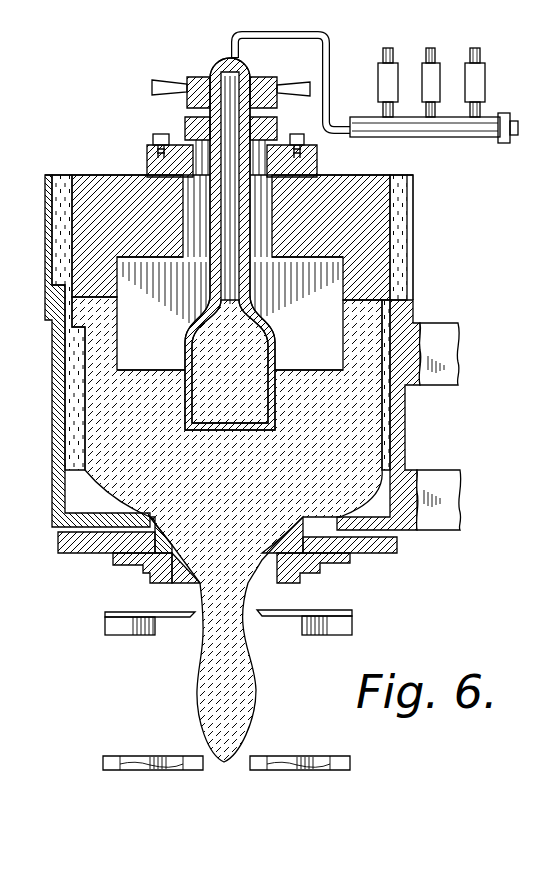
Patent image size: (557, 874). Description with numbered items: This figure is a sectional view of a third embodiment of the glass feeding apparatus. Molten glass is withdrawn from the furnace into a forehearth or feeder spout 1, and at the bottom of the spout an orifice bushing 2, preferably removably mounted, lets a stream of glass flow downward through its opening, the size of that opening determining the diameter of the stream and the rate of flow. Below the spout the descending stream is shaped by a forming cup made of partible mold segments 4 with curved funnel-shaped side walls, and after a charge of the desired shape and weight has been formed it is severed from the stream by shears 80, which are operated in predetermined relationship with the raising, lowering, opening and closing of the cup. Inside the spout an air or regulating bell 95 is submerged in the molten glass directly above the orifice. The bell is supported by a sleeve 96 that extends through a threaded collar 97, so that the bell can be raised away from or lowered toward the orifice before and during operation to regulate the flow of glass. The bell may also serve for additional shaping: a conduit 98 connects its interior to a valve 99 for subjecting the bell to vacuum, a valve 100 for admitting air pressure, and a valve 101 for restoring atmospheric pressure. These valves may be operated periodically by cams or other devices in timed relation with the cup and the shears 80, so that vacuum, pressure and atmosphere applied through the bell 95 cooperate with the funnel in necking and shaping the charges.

The forehearth or feeder spout 1 is at (421, 318).
The orifice bushing 2 is at (191, 582).
The partible mold segments 4 is at (160, 757).
The shears 80 is at (183, 618).
The air or regulating bell 95 is at (277, 348).
The sleeve 96 is at (188, 100).
The threaded collar 97 is at (186, 129).
The conduit 98 is at (320, 41).
The valve 99 is at (378, 85).
The valve 100 is at (432, 77).
The valve 101 is at (486, 77).